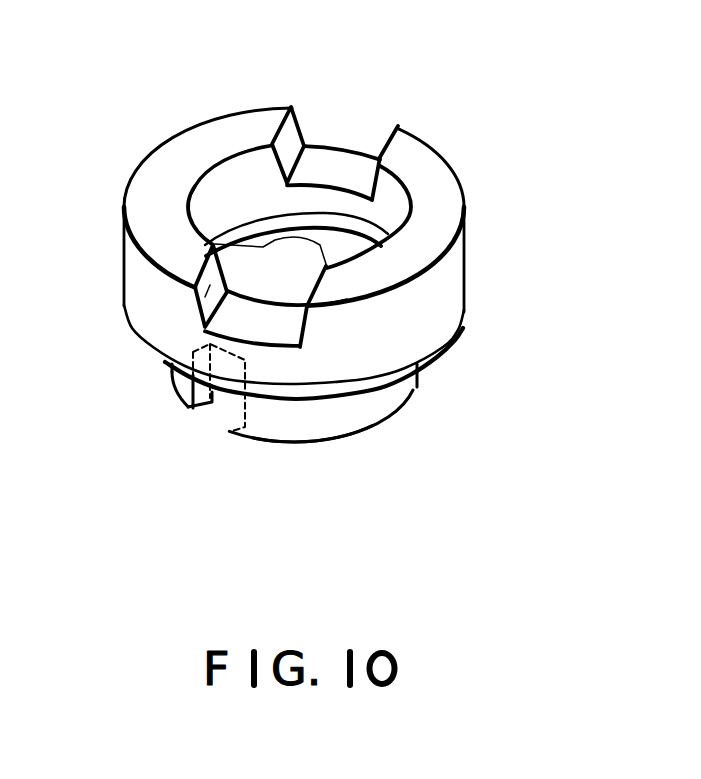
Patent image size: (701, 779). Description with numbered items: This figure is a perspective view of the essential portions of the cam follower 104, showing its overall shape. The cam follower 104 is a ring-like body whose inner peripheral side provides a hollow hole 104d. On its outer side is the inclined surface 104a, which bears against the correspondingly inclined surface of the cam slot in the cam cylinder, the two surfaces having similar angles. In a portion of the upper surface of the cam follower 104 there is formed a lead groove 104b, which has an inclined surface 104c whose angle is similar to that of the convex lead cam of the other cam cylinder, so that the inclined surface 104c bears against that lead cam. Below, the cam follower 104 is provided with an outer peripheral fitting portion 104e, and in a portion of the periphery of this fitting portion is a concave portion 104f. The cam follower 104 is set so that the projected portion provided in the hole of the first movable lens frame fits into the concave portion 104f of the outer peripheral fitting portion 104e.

The cam follower 104 is at (447, 208).
The inclined surface 104a is at (367, 388).
The lead groove 104b is at (399, 112).
The inclined surface 104c is at (290, 140).
The hollow hole 104d is at (245, 228).
The outer peripheral fitting portion 104e is at (280, 425).
The concave portion 104f is at (220, 397).